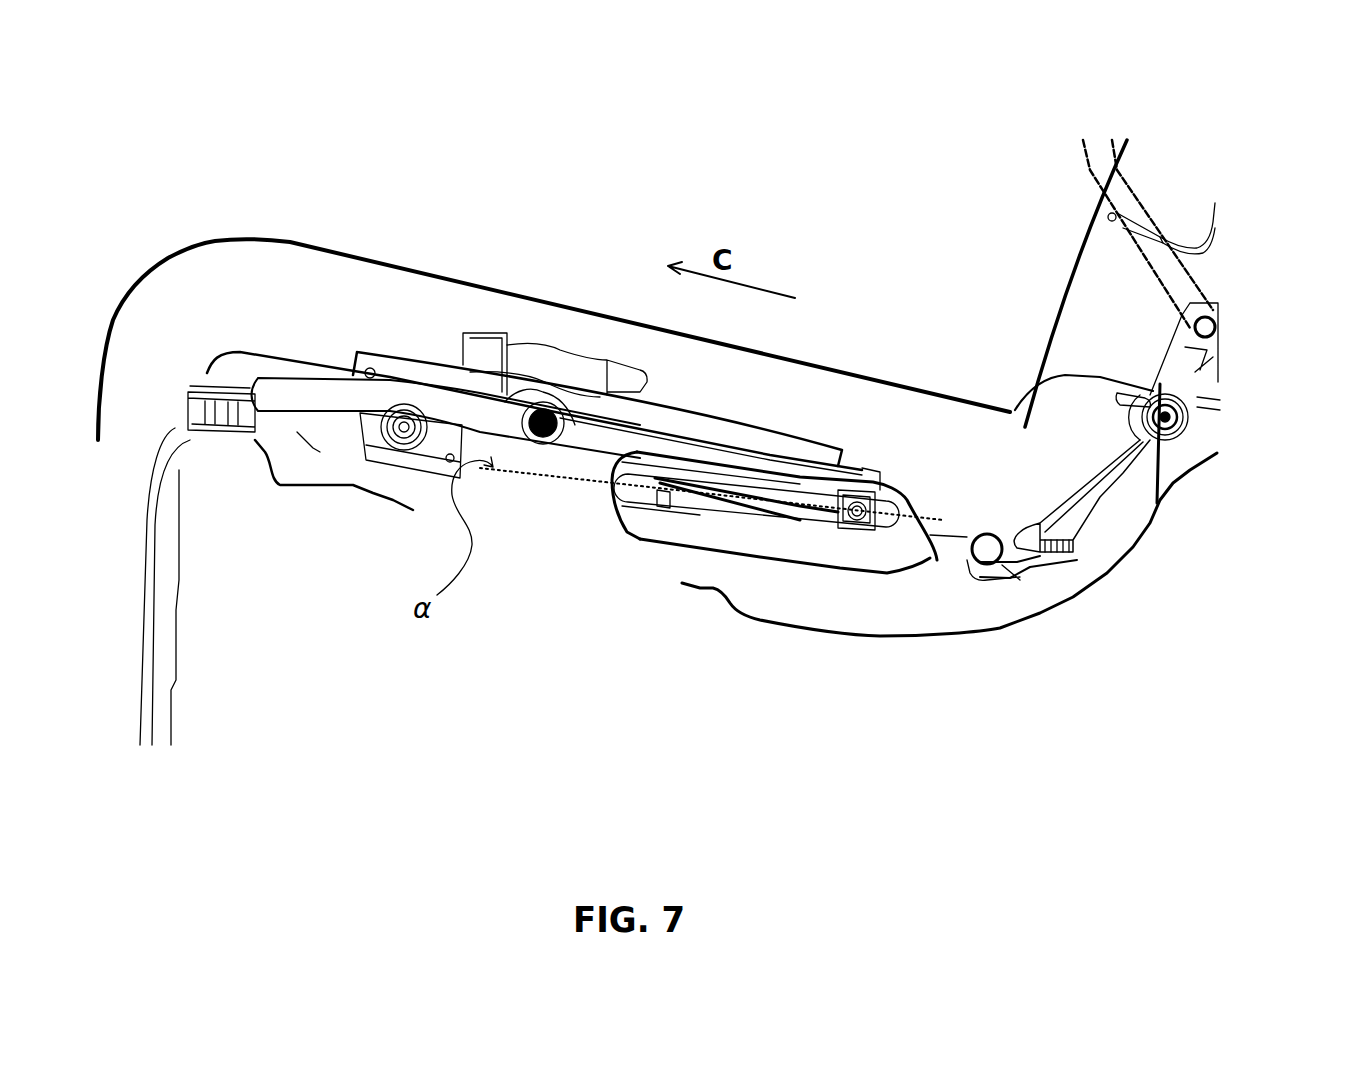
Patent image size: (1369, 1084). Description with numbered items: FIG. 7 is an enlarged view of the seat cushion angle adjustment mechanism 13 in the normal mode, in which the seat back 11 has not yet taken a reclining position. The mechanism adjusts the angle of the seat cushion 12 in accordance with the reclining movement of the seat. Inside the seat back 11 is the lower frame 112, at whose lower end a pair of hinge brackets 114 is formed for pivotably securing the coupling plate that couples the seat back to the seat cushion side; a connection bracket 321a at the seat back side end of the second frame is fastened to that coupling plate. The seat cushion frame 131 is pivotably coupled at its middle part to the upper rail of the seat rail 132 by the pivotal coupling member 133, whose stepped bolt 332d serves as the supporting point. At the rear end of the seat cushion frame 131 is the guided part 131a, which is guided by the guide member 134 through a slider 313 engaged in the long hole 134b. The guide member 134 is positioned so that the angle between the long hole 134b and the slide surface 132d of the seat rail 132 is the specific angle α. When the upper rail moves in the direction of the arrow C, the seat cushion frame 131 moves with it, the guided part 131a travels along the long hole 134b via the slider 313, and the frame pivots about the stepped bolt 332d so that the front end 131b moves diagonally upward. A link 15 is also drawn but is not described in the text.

The seat back 11 is at (1077, 243).
The lower frame 112 is at (1193, 280).
The hinge brackets 114 is at (1207, 373).
The seat cushion 12 is at (827, 368).
The seat cushion angle adjustment mechanism 13 is at (539, 528).
The seat cushion frame 131 is at (337, 393).
The guided part 131a is at (870, 468).
The front end 131b is at (256, 378).
The seat rail 132 is at (380, 367).
The slide surface 132d is at (438, 362).
The pivotal coupling member 133 is at (557, 377).
The guide member 134 is at (780, 550).
The long hole 134b is at (670, 508).
The link 15 is at (1103, 502).
The slider 313 is at (862, 530).
The connection bracket 321a is at (1003, 568).
The stepped bolt 332d is at (570, 457).